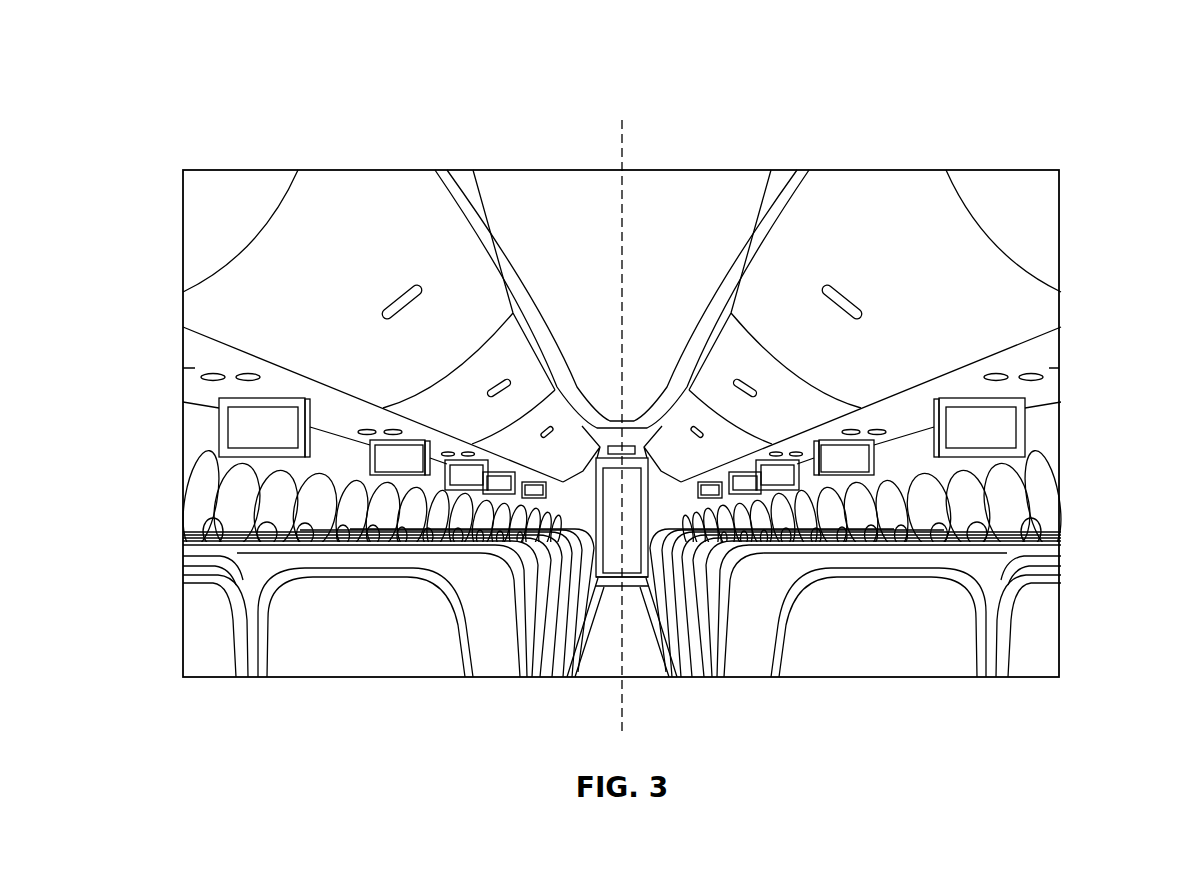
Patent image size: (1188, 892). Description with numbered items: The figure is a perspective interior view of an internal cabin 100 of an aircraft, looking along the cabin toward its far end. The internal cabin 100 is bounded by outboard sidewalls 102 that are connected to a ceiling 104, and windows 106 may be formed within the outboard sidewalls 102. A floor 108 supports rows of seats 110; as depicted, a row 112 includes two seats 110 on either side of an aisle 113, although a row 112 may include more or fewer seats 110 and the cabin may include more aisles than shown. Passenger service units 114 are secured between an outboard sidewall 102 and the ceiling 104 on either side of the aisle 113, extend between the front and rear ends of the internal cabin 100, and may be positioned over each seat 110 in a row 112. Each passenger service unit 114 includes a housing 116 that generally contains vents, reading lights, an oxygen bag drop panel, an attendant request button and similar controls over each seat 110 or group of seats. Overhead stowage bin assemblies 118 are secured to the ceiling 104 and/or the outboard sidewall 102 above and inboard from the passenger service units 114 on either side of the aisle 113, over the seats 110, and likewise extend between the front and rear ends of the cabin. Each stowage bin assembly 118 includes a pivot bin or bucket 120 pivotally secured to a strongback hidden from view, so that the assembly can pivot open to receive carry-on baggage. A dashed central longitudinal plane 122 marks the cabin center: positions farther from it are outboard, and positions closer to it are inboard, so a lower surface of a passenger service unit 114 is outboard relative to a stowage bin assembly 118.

The internal cabin 100 is at (131, 129).
The outboard sidewall 102 is at (195, 428).
The ceiling 104 is at (683, 168).
The window 106 is at (203, 533).
The floor 108 is at (610, 657).
The seat 110 is at (358, 663).
The row 112 is at (192, 633).
The aisle 113 is at (645, 657).
The passenger service unit 114 is at (212, 383).
The housing 116 is at (195, 368).
The overhead stowage bin assembly 118 is at (295, 223).
The pivot bin 120 is at (367, 187).
The central longitudinal plane 122 is at (619, 140).